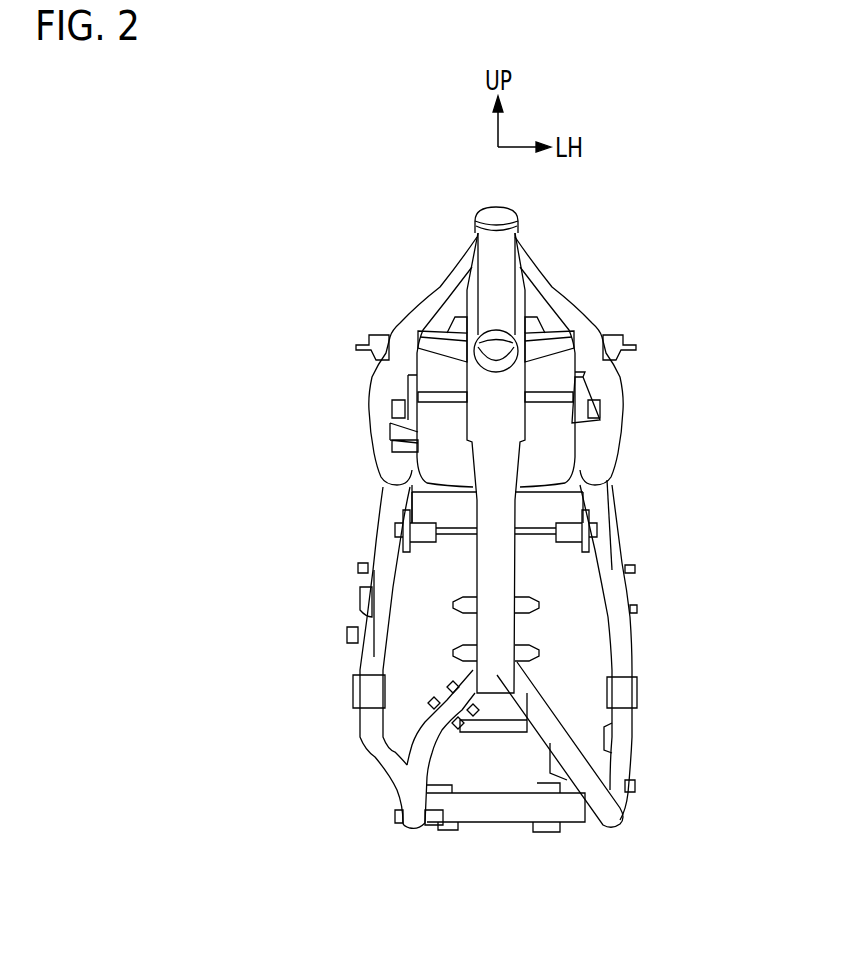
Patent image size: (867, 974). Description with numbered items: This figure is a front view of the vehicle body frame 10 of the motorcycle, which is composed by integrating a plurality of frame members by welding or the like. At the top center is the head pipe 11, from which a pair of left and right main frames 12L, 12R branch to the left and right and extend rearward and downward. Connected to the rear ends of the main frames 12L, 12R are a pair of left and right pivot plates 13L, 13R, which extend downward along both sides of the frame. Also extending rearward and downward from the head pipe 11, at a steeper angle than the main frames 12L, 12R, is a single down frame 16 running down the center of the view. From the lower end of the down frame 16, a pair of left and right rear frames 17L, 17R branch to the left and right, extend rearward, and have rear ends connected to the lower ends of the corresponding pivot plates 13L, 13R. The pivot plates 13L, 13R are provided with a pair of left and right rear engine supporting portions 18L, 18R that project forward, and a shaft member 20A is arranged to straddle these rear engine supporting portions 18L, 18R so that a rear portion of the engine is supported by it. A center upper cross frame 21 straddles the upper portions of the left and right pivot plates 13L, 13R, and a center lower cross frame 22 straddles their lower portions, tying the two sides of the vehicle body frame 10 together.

The vehicle body frame 10 is at (654, 243).
The head pipe 11 is at (507, 278).
The left main frame 12L is at (560, 305).
The right main frame 12R is at (437, 300).
The left pivot plate 13L is at (625, 632).
The right pivot plate 13R is at (369, 650).
The down frame 16 is at (510, 413).
The left rear frame 17L is at (573, 752).
The right rear frame 17R is at (413, 748).
The left rear engine supporting portion 18L is at (566, 543).
The right rear engine supporting portion 18R is at (423, 549).
The shaft member 20A is at (450, 547).
The center upper cross frame 21 is at (555, 505).
The center lower cross frame 22 is at (493, 810).